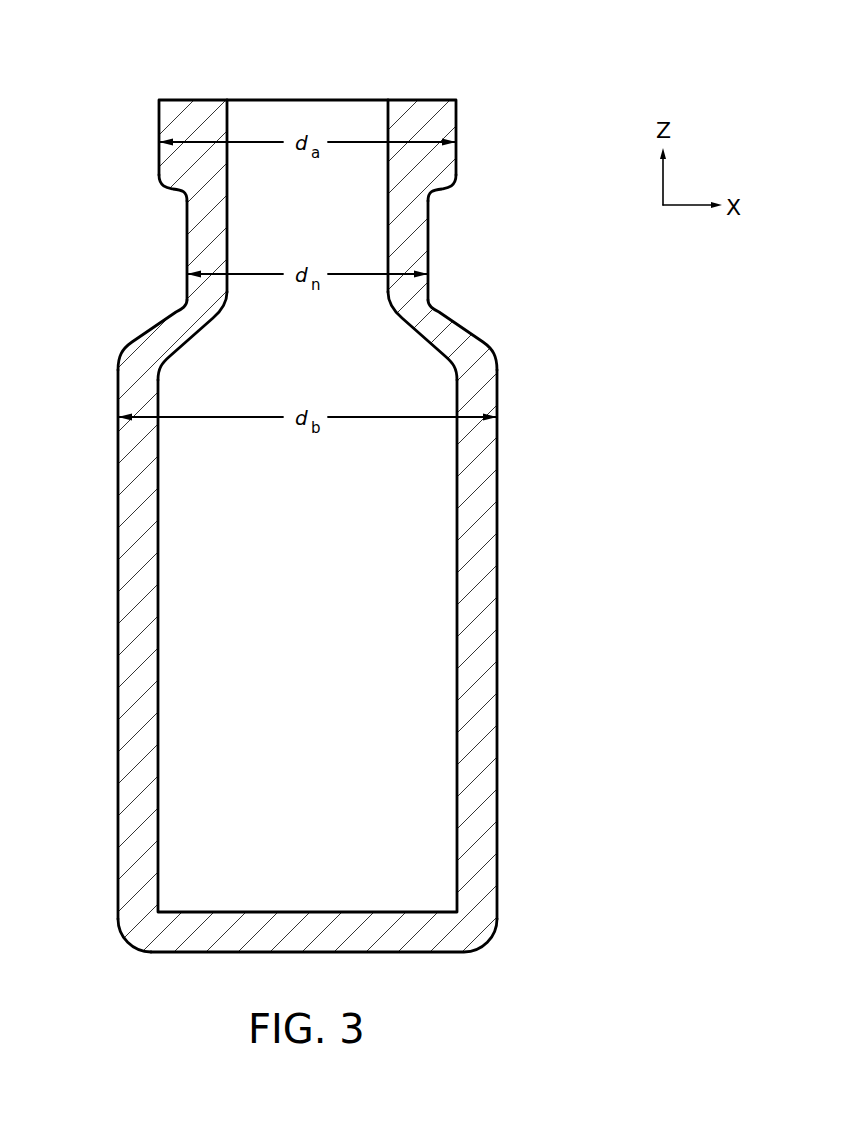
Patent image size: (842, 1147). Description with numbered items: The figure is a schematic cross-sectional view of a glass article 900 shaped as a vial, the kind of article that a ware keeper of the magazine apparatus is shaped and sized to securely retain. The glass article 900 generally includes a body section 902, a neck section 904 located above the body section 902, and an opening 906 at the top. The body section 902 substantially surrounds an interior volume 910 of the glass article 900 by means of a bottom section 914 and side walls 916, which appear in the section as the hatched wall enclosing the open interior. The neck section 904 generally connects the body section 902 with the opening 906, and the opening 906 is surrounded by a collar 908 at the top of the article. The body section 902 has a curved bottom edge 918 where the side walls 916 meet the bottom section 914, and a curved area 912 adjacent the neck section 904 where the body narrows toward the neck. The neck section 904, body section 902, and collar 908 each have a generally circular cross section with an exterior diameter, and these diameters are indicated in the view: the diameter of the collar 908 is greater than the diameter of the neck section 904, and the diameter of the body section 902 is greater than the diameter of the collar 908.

The glass article 900 is at (421, 573).
The body section 902 is at (497, 572).
The neck section 904 is at (428, 238).
The opening 906 is at (307, 149).
The collar 908 is at (159, 128).
The interior volume 910 is at (330, 672).
The curved area 912 is at (120, 356).
The bottom section 914 is at (408, 953).
The side walls 916 is at (118, 571).
The curved bottom edge 918 is at (124, 940).